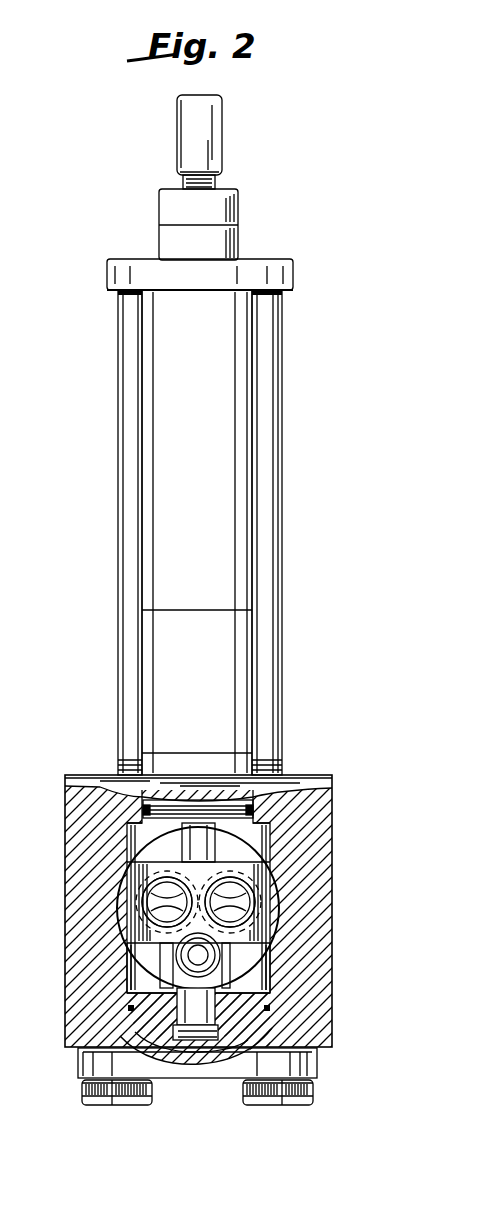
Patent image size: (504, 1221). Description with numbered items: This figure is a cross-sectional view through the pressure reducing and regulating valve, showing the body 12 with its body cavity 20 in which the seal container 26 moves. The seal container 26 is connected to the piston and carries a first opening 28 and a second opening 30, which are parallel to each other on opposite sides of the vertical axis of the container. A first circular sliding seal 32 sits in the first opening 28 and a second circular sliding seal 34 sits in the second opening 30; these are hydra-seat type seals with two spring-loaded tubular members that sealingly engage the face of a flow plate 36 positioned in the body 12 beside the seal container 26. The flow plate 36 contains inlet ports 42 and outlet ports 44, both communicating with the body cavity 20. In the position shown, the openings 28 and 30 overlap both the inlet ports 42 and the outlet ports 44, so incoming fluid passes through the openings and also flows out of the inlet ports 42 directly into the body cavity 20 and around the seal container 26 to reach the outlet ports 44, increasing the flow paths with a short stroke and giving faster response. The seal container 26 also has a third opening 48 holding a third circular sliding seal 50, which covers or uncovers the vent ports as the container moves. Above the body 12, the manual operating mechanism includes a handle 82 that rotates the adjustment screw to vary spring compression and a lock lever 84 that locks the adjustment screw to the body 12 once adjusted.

The body 12 is at (333, 785).
The body cavity 20 is at (131, 984).
The seal container 26 is at (268, 884).
The first opening 28 is at (165, 903).
The second opening 30 is at (232, 902).
The first circular sliding seal 32 is at (150, 915).
The second circular sliding seal 34 is at (247, 912).
The first flow plate 36 is at (272, 958).
The inlet ports 42 is at (120, 878).
The outlet ports 44 is at (128, 955).
The third opening 48 is at (206, 957).
The third circular sliding seal 50 is at (220, 982).
The handle 82 is at (223, 130).
The lock lever 84 is at (239, 209).